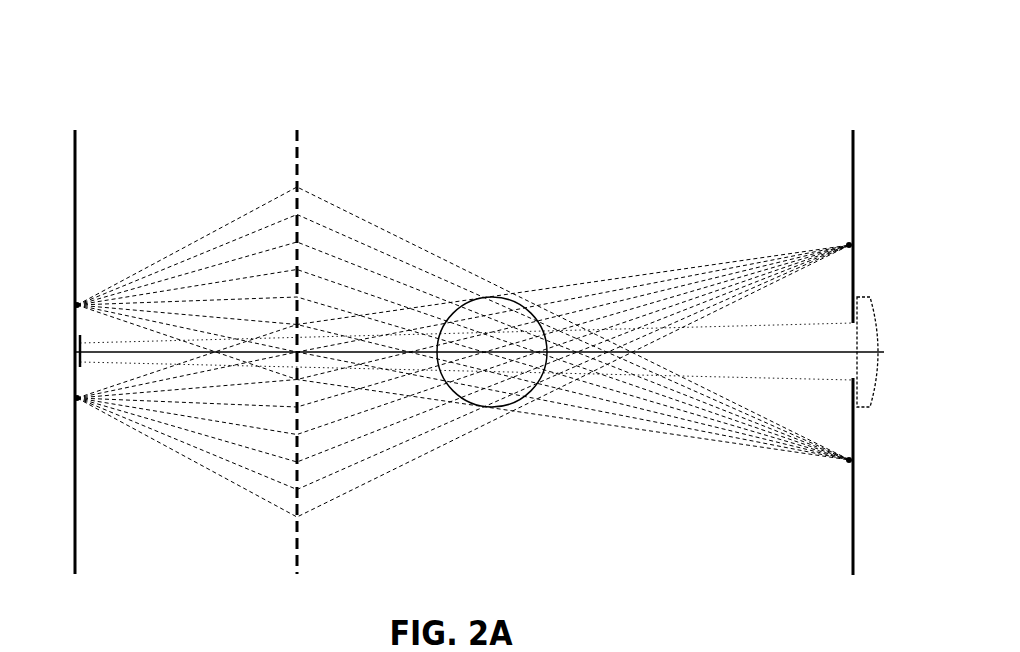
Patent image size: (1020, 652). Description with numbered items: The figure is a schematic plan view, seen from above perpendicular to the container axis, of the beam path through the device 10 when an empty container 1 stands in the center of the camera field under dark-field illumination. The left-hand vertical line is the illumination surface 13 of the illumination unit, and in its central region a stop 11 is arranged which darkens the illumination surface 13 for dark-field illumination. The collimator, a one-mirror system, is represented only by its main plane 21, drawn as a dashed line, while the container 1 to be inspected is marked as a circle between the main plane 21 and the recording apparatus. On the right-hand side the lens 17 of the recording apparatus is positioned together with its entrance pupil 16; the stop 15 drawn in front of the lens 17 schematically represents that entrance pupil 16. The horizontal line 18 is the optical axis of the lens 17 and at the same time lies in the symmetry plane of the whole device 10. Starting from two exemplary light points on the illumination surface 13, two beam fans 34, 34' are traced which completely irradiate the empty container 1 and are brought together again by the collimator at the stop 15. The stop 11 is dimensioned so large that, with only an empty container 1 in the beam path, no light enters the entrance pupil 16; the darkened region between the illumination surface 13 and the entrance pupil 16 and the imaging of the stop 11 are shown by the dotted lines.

The container 1 is at (512, 298).
The device 10 is at (158, 66).
The stop 11 is at (92, 372).
The illumination surface 13 is at (75, 133).
The stop 15 is at (853, 152).
The entrance pupil 16 is at (838, 362).
The lens 17 is at (864, 408).
The optical axis of lens 18 is at (700, 352).
The main plane of mirror system 21 is at (297, 133).
The beam fan 34 is at (782, 216).
The beam fan 34' is at (814, 512).